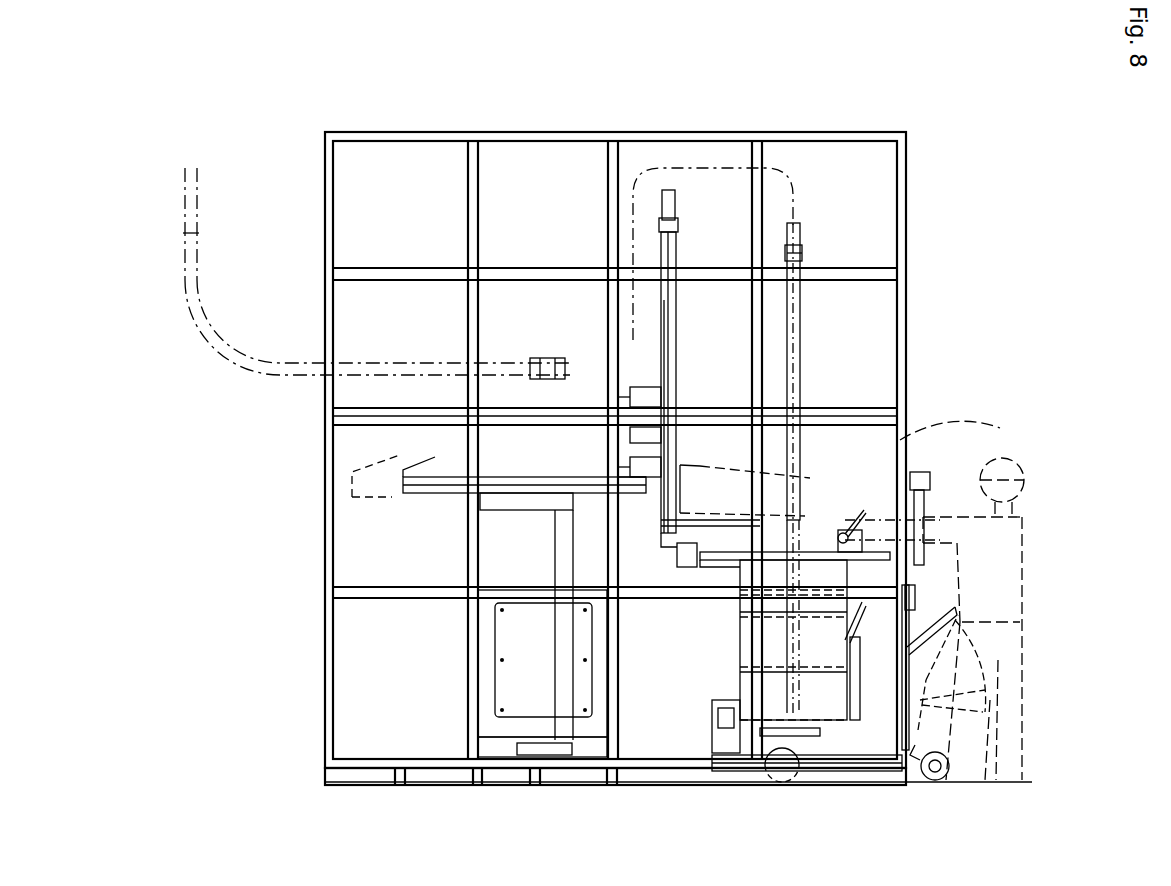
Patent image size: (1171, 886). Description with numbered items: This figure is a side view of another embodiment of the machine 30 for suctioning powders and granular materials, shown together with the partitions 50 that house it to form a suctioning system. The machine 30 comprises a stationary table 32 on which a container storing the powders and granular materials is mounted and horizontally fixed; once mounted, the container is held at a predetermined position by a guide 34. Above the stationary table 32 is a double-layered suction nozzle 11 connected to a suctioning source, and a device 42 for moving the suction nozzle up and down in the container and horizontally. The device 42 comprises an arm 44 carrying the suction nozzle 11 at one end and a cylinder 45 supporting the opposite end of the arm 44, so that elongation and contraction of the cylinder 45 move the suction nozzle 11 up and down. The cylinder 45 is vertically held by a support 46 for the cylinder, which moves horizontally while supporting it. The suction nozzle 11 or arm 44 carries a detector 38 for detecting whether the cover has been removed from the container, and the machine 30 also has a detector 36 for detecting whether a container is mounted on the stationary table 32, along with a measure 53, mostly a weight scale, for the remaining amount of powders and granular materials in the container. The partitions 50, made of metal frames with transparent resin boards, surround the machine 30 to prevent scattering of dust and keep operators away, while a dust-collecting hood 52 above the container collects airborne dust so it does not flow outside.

The partitions 50 is at (856, 128).
The machine for suctioning powders and granular materials 30 is at (845, 190).
The device for moving the suction nozzle 42 is at (656, 212).
The cylinder 45 is at (678, 243).
The arm 44 is at (722, 483).
The suction nozzle 11 is at (785, 482).
The support for the cylinder 46 is at (435, 453).
The dust-collecting hood 52 is at (737, 540).
The stationary table 32 is at (777, 723).
The detector for detecting the container 36 is at (705, 690).
The detector for detecting a cover 38 is at (823, 553).
The guide 34 is at (863, 690).
The measure for the remaining amount of the powders and granular materials 53 is at (720, 767).